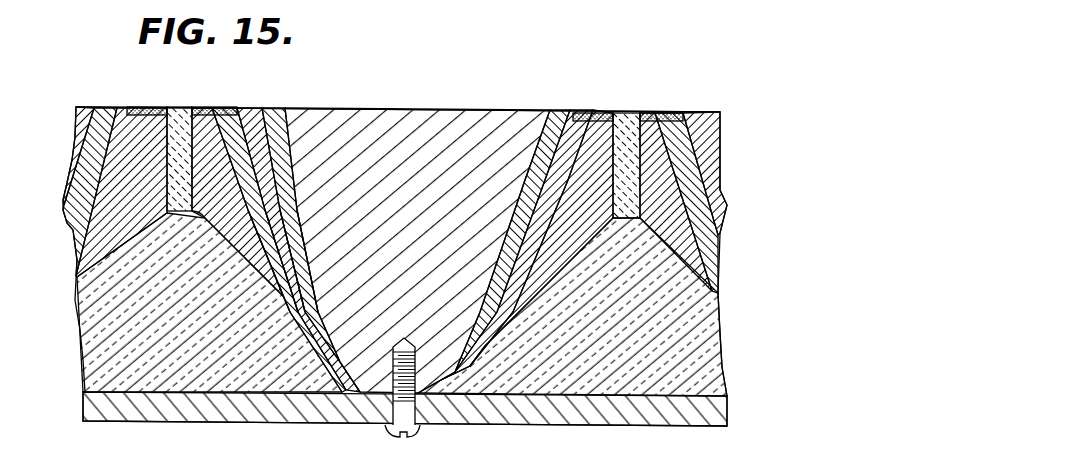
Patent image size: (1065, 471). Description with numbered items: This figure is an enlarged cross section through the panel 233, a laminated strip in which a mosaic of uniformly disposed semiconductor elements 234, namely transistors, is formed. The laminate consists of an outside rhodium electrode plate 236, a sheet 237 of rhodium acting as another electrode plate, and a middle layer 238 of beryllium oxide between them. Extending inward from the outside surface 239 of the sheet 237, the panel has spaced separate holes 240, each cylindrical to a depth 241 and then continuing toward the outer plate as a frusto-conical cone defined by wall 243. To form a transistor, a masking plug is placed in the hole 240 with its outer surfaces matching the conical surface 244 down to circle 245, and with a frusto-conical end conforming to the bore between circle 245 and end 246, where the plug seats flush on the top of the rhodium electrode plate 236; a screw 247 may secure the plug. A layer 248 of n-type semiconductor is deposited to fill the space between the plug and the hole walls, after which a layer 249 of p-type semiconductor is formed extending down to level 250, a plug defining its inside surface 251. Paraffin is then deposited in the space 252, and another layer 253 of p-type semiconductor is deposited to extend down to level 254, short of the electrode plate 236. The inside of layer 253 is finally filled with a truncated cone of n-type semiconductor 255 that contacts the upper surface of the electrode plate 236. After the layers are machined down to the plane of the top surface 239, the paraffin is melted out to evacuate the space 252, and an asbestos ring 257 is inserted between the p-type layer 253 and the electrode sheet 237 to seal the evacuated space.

The panel 233 is at (753, 219).
The semiconductor elements 234 is at (369, 106).
The outside rhodium electrode plate 236 is at (660, 412).
The sheet of rhodium 237 is at (632, 118).
The middle layer of beryllium oxide 238 is at (90, 330).
The outside surface 239 is at (173, 107).
The holes 240 is at (205, 135).
The depth 241 is at (205, 218).
The wall 243 is at (302, 325).
The conical surface 244 is at (285, 300).
The circle 245 is at (318, 340).
The end 246 is at (372, 394).
The screw 247 is at (415, 431).
The layer of n-type semiconductor 248 is at (227, 150).
The layer of p-type semiconductor 249 is at (250, 167).
The level 250 is at (327, 362).
The inside surface 251 is at (273, 232).
The space 252 is at (566, 147).
The layer of p-type semiconductor 253 is at (537, 153).
The level 254 is at (338, 362).
The truncated cone of n-type semiconductor 255 is at (412, 122).
The asbestos ring 257 is at (596, 112).